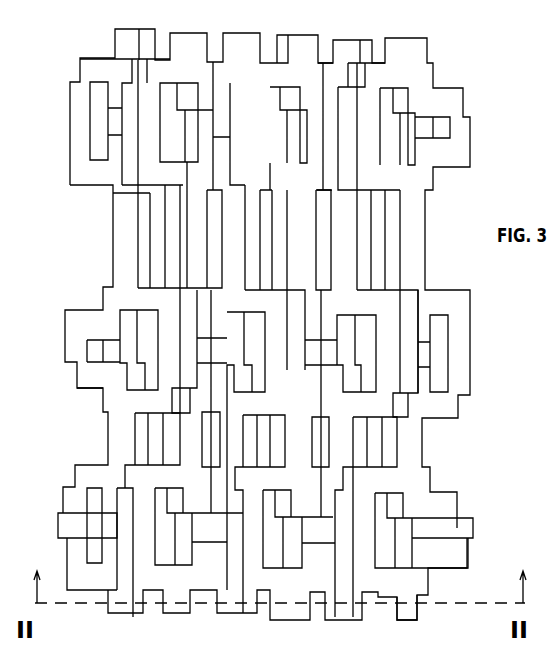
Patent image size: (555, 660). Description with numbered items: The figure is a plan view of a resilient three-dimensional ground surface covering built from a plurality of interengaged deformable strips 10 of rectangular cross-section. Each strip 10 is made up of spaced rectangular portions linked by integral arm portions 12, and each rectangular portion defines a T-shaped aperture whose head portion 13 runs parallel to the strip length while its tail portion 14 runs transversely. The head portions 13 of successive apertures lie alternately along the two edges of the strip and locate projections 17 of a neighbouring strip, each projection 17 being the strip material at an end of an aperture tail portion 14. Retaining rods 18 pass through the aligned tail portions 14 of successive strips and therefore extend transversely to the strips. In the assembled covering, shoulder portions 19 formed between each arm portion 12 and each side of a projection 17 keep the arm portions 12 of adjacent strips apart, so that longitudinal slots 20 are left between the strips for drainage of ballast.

The deformable strip 10 is at (171, 621).
The arm portion 12 is at (170, 435).
The head portion 13 is at (87, 505).
The tail portion 14 is at (87, 345).
The projection 17 is at (181, 557).
The retaining rod 18 is at (70, 533).
The shoulder portion 19 is at (105, 398).
The longitudinal slot 20 is at (152, 243).